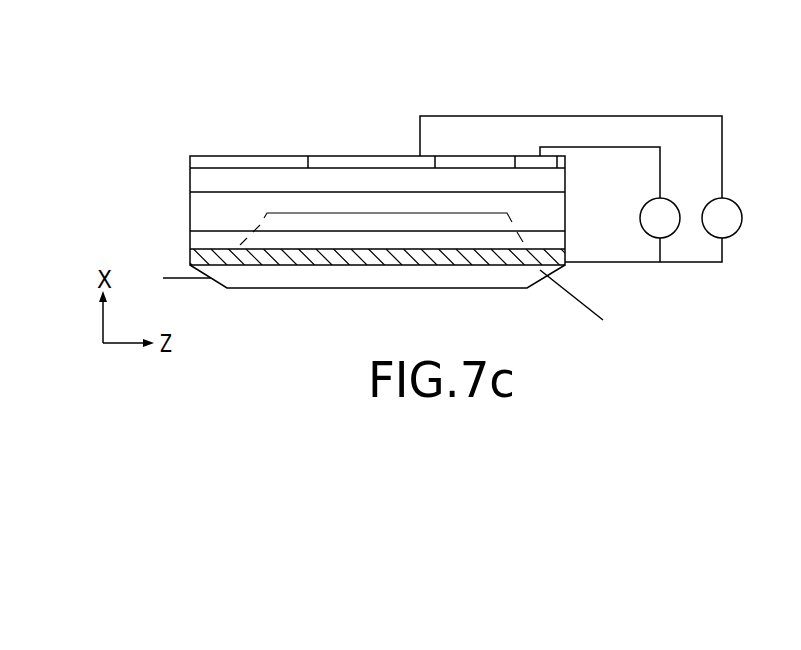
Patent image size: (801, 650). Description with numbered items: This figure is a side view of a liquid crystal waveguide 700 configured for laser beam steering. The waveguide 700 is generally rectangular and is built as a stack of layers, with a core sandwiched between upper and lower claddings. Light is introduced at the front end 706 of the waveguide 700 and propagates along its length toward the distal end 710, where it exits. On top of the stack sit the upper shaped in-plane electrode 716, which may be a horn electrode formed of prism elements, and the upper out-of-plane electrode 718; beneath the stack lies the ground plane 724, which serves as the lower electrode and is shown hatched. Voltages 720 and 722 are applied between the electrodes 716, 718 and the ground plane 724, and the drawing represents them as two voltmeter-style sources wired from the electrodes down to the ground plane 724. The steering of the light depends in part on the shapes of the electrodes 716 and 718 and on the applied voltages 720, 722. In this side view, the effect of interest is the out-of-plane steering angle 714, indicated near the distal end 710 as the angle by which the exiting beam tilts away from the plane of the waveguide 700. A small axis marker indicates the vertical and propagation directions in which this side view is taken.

The waveguide 700 is at (610, 95).
The front end 706 is at (186, 237).
The distal end 710 is at (571, 239).
The out-of-plane steering angle 714 is at (568, 297).
The upper shaped in-plane electrode 716 is at (370, 156).
The upper out-of-plane electrode 718 is at (530, 156).
The voltage 720 is at (730, 239).
The voltage 722 is at (670, 197).
The ground plane 724 is at (295, 265).